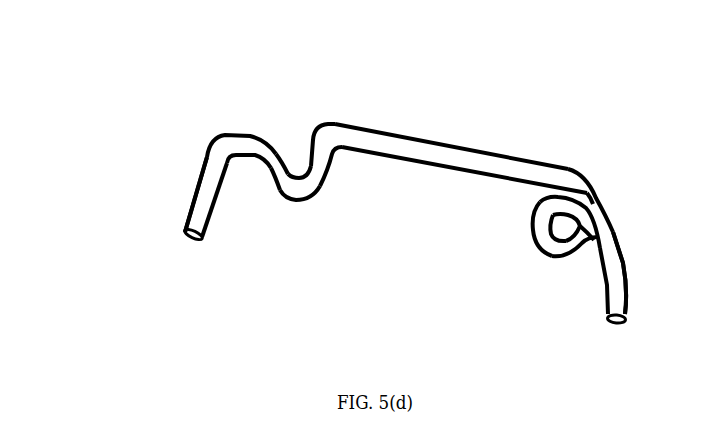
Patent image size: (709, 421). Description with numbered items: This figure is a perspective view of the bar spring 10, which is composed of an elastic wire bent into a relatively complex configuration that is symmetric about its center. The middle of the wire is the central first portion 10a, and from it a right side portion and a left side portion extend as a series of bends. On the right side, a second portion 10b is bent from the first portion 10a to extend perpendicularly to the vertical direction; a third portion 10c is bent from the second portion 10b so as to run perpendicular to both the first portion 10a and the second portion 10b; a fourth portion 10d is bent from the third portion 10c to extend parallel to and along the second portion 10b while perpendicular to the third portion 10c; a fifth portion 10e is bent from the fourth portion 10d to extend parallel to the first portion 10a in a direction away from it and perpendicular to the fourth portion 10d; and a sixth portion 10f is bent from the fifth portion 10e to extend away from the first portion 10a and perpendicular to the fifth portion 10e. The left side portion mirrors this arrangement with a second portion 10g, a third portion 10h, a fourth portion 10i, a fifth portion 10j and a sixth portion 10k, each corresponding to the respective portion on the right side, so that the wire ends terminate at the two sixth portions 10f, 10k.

The bar spring 10 is at (366, 110).
The first portion 10a is at (465, 150).
The second portion 10b is at (591, 197).
The third portion 10c is at (568, 253).
The fourth portion 10d is at (536, 240).
The fifth portion 10e is at (552, 208).
The sixth portion 10f is at (620, 295).
The second portion 10g is at (330, 162).
The third portion 10h is at (300, 186).
The fourth portion 10i is at (278, 184).
The fifth portion 10j is at (266, 150).
The sixth portion 10k is at (198, 208).